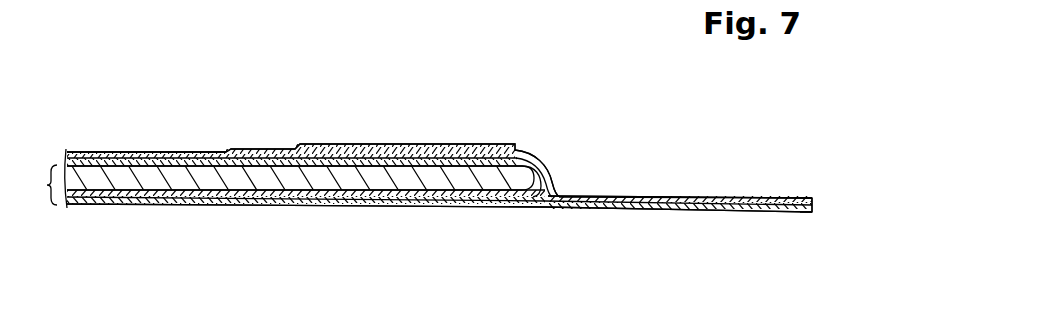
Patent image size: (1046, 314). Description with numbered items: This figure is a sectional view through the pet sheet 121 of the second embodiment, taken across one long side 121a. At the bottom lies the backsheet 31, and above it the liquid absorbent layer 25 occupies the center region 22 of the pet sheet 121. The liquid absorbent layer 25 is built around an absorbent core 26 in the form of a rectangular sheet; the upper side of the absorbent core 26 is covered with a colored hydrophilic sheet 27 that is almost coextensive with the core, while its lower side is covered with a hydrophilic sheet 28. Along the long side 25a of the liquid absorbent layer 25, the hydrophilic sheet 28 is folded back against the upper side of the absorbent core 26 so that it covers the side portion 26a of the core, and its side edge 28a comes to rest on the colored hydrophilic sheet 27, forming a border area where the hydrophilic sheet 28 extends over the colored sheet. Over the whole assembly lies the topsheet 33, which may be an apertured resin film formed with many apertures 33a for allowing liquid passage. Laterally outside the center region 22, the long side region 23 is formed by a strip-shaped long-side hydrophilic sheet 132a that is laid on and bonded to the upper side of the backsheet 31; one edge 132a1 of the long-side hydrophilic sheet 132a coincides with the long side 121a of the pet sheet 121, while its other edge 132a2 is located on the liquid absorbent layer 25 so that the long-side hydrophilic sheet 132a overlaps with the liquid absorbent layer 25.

The pet sheet 121 is at (538, 91).
The long side 121a is at (814, 211).
The center region 22 is at (151, 130).
The long side region 23 is at (666, 191).
The liquid absorbent layer 25 is at (44, 178).
The long side of liquid absorbent layer 25a is at (546, 163).
The absorbent core 26 is at (175, 178).
The side portion of absorbent core 26a is at (517, 181).
The colored hydrophilic sheet 27 is at (175, 160).
The hydrophilic sheet 28 is at (250, 200).
The side edge of hydrophilic sheet 28a is at (307, 200).
The backsheet 31 is at (603, 209).
The topsheet 33 is at (78, 151).
The apertures 33a is at (95, 152).
The long-side hydrophilic sheet 132a is at (597, 196).
The one edge of long-side hydrophilic sheet 132a1 is at (814, 197).
The another edge of long-side hydrophilic sheet 132a2 is at (220, 151).